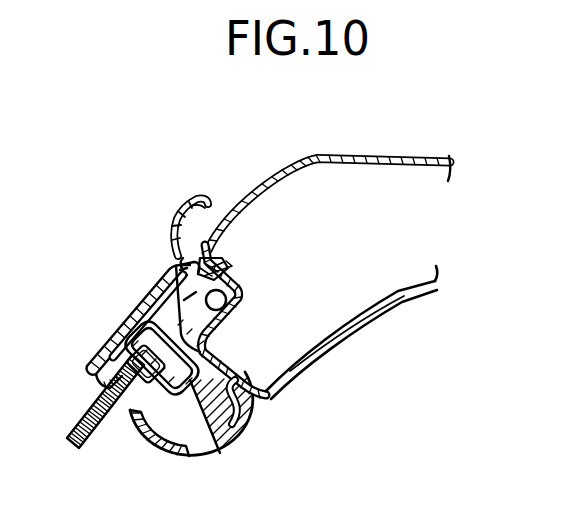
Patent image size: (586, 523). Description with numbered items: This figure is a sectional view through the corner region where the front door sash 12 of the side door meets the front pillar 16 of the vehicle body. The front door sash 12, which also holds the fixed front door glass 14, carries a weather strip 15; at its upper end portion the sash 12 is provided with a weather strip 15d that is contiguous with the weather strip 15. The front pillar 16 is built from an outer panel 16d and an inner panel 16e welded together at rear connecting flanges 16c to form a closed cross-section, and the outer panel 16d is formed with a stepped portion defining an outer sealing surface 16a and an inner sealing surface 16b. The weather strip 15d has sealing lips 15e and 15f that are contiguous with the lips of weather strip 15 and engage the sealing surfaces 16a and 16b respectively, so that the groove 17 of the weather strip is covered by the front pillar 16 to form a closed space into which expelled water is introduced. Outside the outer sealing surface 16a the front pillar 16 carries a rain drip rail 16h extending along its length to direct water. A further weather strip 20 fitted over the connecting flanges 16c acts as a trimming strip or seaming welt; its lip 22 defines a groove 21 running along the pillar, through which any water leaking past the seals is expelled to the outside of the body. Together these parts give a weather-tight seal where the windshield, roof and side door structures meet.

The front door sash 12 is at (90, 372).
The fixed front door glass 14 is at (82, 415).
The weather strip 15 is at (162, 357).
The weather strip 15d is at (116, 320).
The sealing lip 15e is at (177, 259).
The sealing lip 15f is at (240, 298).
The front pillar 16 is at (366, 140).
The outer sealing surface 16a is at (217, 262).
The inner sealing surface 16b is at (218, 314).
The rear connecting flanges 16c is at (256, 408).
The outer panel 16d is at (311, 152).
The inner panel 16e is at (388, 305).
The rain drip rail 16h is at (185, 200).
The groove 17 is at (152, 292).
The weather strip 20 is at (245, 430).
The groove 21 is at (193, 447).
The lip 22 is at (133, 432).